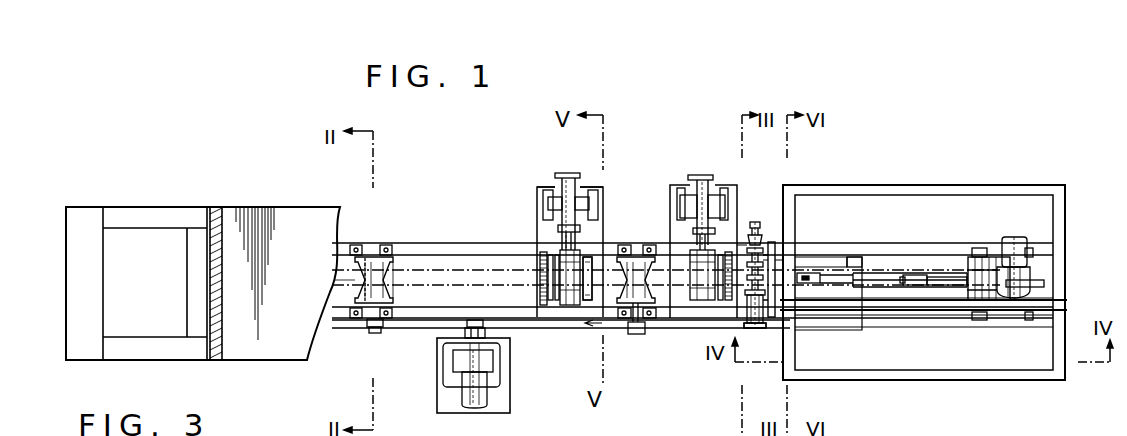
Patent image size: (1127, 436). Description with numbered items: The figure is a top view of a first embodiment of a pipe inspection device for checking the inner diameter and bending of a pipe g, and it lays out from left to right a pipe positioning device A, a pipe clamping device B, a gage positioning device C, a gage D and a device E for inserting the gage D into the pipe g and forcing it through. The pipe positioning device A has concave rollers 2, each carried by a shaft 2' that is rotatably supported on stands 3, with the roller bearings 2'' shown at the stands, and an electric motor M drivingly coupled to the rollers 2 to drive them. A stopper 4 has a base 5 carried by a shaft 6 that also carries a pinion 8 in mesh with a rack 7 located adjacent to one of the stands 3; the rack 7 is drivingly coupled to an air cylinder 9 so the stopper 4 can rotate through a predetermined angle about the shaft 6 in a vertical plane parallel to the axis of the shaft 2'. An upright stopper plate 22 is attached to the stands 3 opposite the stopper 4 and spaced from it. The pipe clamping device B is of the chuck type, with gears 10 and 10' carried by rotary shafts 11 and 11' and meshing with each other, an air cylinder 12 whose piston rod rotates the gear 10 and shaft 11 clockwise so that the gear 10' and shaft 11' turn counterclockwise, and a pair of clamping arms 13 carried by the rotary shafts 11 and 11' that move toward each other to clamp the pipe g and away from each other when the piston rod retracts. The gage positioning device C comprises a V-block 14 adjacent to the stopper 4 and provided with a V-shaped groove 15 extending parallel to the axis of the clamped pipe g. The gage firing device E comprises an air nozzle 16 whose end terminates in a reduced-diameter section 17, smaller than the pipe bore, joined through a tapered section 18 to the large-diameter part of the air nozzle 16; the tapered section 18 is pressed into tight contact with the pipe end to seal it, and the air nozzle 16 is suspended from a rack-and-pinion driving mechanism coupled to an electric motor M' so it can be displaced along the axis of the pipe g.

The concave rollers 2 is at (503, 273).
The shaft 2' is at (357, 288).
The roller bearing 2'' is at (324, 281).
The stands 3 is at (445, 243).
The stopper 4 is at (771, 318).
The base 5 is at (805, 273).
The shaft 6 is at (770, 262).
The rack 7 is at (757, 230).
The pinion 8 is at (740, 246).
The air cylinder 9 is at (746, 325).
The gear 10 is at (620, 309).
The gear 10' is at (512, 259).
The rotary shaft 11 is at (554, 310).
The rotary shaft 11' is at (532, 256).
The air cylinder 12 is at (562, 181).
The clamping arms 13 is at (582, 262).
The V-block 14 is at (853, 258).
The V-shaped groove 15 is at (858, 276).
The air nozzle 16 is at (973, 278).
The reduced-diameter section 17 is at (907, 276).
The tapered section 18 is at (950, 277).
The upright stopper plate 22 is at (224, 335).
The pipe g is at (400, 300).
The pipe positioning device A is at (630, 361).
The pipe clamping device B is at (590, 184).
The gage positioning device C is at (851, 336).
The gage D is at (822, 265).
The device for inserting the gage E is at (942, 287).
The electric motor M is at (473, 378).
The electric motor M' is at (1020, 256).